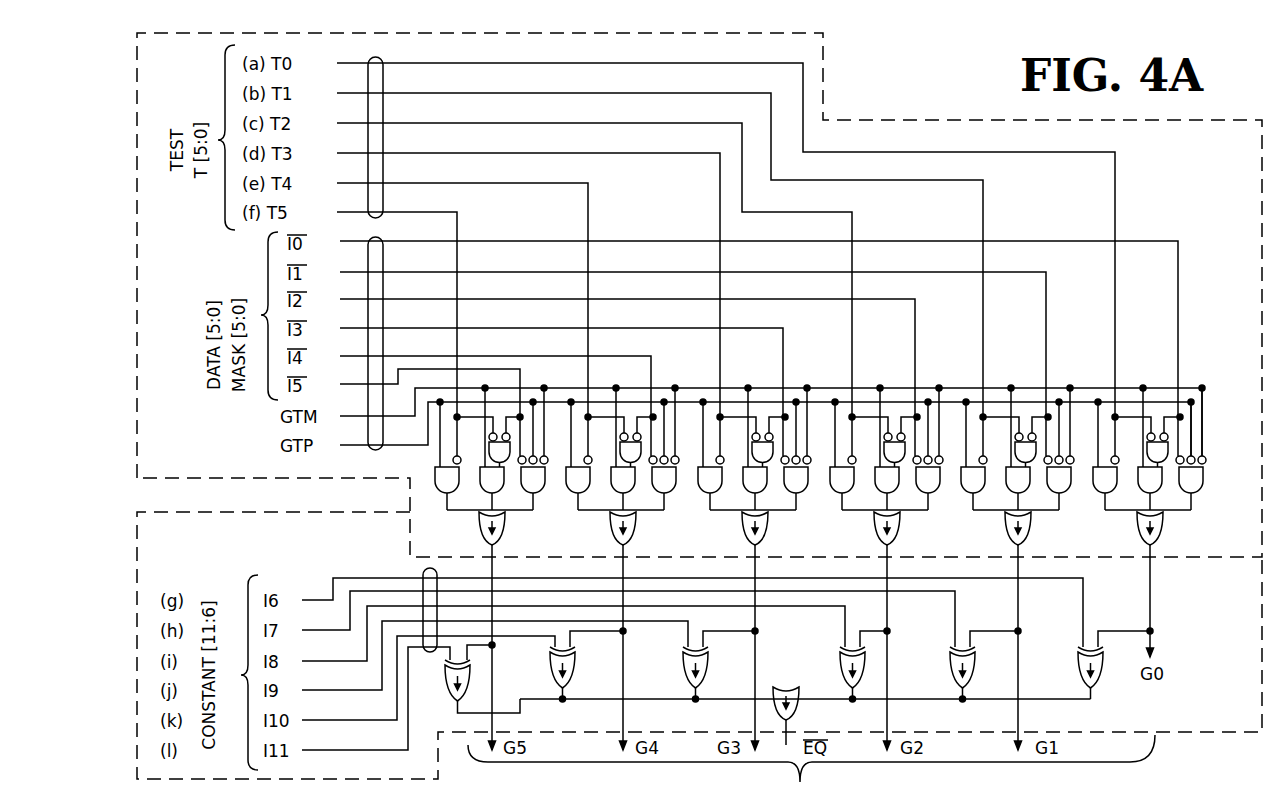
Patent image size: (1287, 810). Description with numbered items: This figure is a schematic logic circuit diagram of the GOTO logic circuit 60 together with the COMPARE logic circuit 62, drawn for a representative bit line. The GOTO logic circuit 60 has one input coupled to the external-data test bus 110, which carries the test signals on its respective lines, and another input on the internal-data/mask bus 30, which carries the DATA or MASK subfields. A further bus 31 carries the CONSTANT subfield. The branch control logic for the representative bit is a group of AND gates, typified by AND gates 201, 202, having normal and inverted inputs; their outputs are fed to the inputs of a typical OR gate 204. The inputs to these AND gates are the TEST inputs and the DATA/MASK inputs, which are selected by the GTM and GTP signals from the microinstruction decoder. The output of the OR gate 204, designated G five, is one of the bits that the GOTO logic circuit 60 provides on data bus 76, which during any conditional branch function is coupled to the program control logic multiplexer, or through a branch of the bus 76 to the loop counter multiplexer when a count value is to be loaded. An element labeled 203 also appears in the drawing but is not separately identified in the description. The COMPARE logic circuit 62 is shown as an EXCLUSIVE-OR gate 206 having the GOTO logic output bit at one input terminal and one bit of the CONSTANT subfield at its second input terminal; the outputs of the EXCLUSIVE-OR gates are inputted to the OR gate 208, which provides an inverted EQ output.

The external-data test bus 110 is at (377, 57).
The internal-data/mask bus 30 is at (377, 237).
The bus 31 is at (420, 571).
The GOTO logic circuit 60 is at (902, 120).
The COMPARE logic circuit 62 is at (212, 512).
The AND gate 201 is at (440, 494).
The AND gate 202 is at (504, 492).
The AND gate 203 is at (545, 494).
The OR gate 204 is at (505, 530).
The EXCLUSIVE-OR gate 206 is at (470, 690).
The OR gate 208 is at (780, 686).
The data bus 76 is at (801, 783).